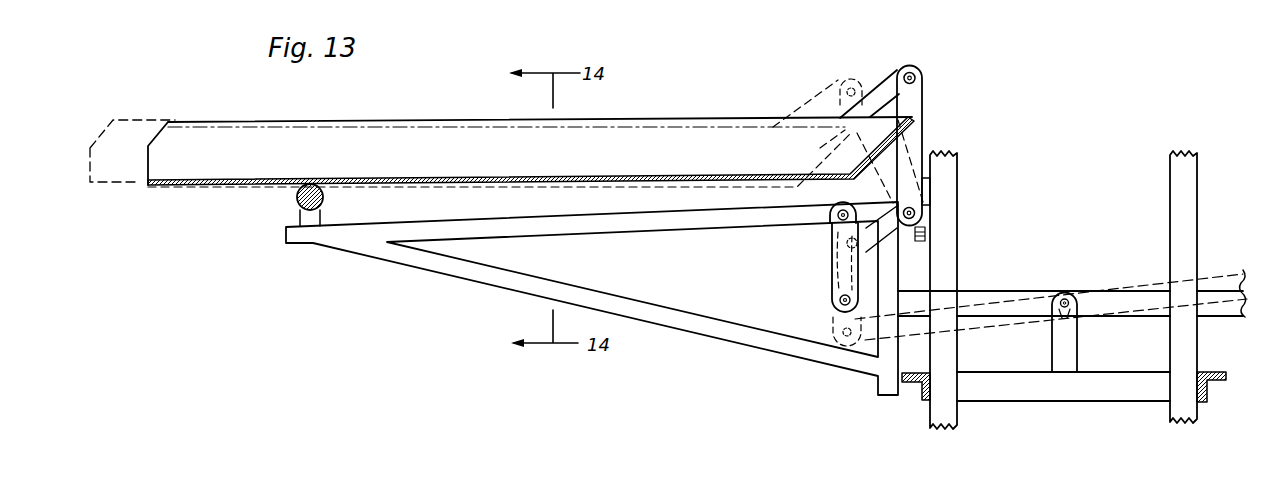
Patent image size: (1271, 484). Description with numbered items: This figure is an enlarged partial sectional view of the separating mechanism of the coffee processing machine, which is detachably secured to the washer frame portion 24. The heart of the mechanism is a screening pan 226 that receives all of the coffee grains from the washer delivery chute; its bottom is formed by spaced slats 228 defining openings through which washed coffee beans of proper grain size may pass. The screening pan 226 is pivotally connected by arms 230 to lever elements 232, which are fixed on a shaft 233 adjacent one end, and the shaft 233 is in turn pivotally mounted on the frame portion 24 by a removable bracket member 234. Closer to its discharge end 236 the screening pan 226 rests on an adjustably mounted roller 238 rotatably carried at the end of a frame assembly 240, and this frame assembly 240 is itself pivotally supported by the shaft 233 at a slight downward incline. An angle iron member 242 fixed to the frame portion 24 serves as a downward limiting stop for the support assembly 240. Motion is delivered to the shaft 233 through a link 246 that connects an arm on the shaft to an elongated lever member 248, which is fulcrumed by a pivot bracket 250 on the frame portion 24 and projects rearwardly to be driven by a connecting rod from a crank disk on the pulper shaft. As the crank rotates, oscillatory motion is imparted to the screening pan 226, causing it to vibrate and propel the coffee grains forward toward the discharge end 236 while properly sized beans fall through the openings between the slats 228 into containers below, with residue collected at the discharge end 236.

The washer frame portion 24 is at (968, 213).
The screening pan 226 is at (283, 138).
The slats 228 is at (642, 175).
The arms 230 is at (875, 84).
The lever elements 232 is at (923, 96).
The shaft 233 is at (920, 216).
The removable bracket member 234 is at (930, 203).
The discharge end 236 is at (147, 170).
The roller 238 is at (297, 194).
The frame assembly 240 is at (663, 324).
The angle iron member 242 is at (913, 382).
The link 246 is at (832, 250).
The elongated lever member 248 is at (983, 295).
The pivot bracket 250 is at (1067, 360).